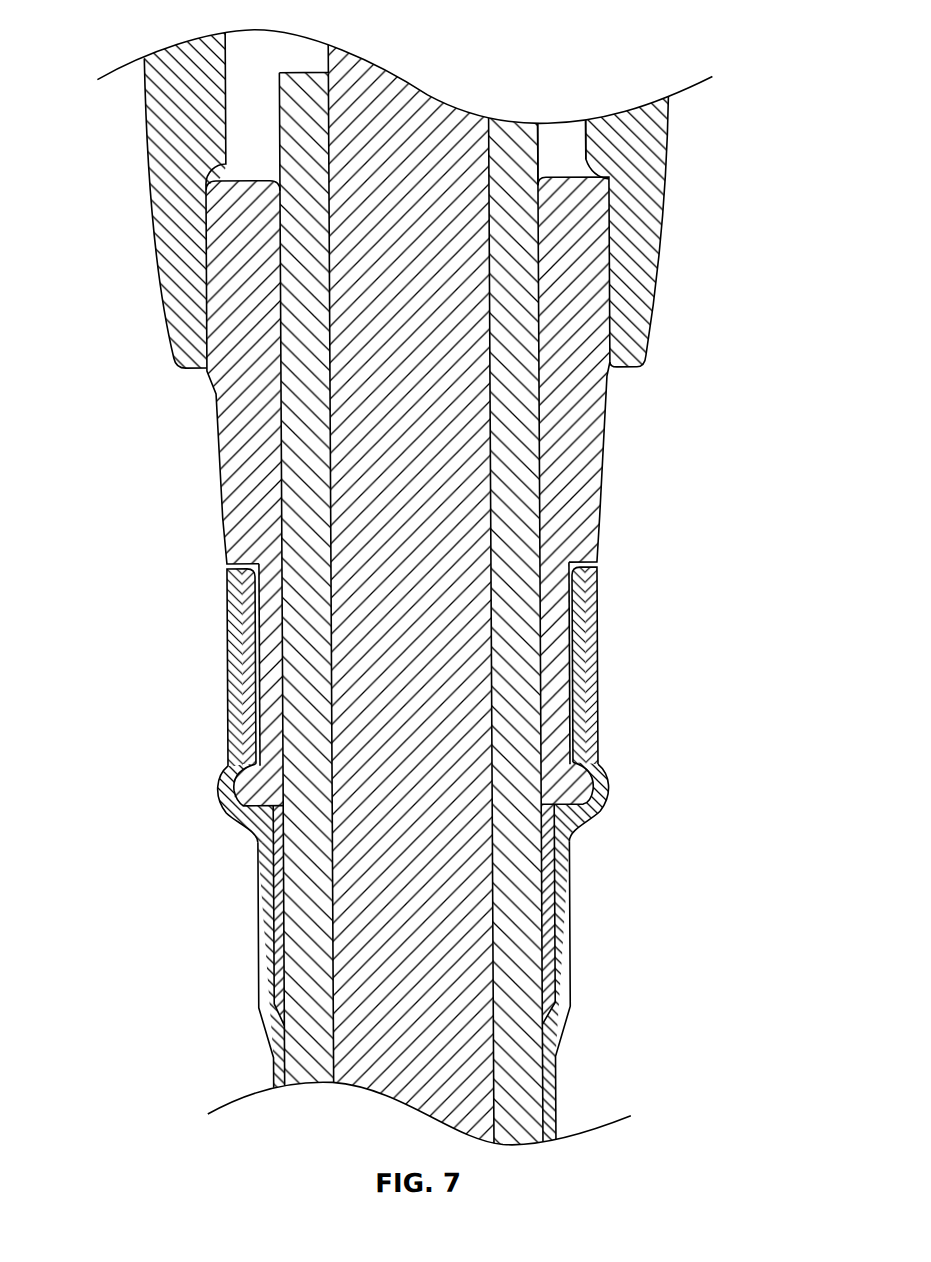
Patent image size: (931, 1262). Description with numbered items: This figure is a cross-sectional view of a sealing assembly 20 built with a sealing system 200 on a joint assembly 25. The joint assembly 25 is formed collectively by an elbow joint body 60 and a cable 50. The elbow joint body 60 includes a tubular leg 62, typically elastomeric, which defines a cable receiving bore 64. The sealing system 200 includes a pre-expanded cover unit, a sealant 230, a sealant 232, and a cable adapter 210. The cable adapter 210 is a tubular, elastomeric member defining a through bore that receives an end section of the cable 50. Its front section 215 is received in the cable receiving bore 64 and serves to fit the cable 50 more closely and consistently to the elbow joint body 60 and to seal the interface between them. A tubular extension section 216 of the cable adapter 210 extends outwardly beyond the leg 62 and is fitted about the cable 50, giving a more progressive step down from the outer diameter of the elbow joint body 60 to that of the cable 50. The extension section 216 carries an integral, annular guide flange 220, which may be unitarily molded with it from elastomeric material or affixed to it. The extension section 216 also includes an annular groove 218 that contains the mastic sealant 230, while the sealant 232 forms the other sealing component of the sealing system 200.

The sealing assembly 20 is at (728, 644).
The joint assembly 25 is at (122, 447).
The cable 50 is at (525, 1017).
The elbow joint body 60 is at (139, 175).
The tubular leg 62 is at (652, 215).
The cable receiving bore 64 is at (573, 135).
The sealing system 200 is at (707, 712).
The cable adapter 210 is at (214, 503).
The front section 215 is at (593, 247).
The tubular extension section 216 is at (548, 605).
The annular groove 218 is at (259, 668).
The guide flange 220 is at (593, 783).
The sealant 230 is at (237, 718).
The sealant 232 is at (288, 927).